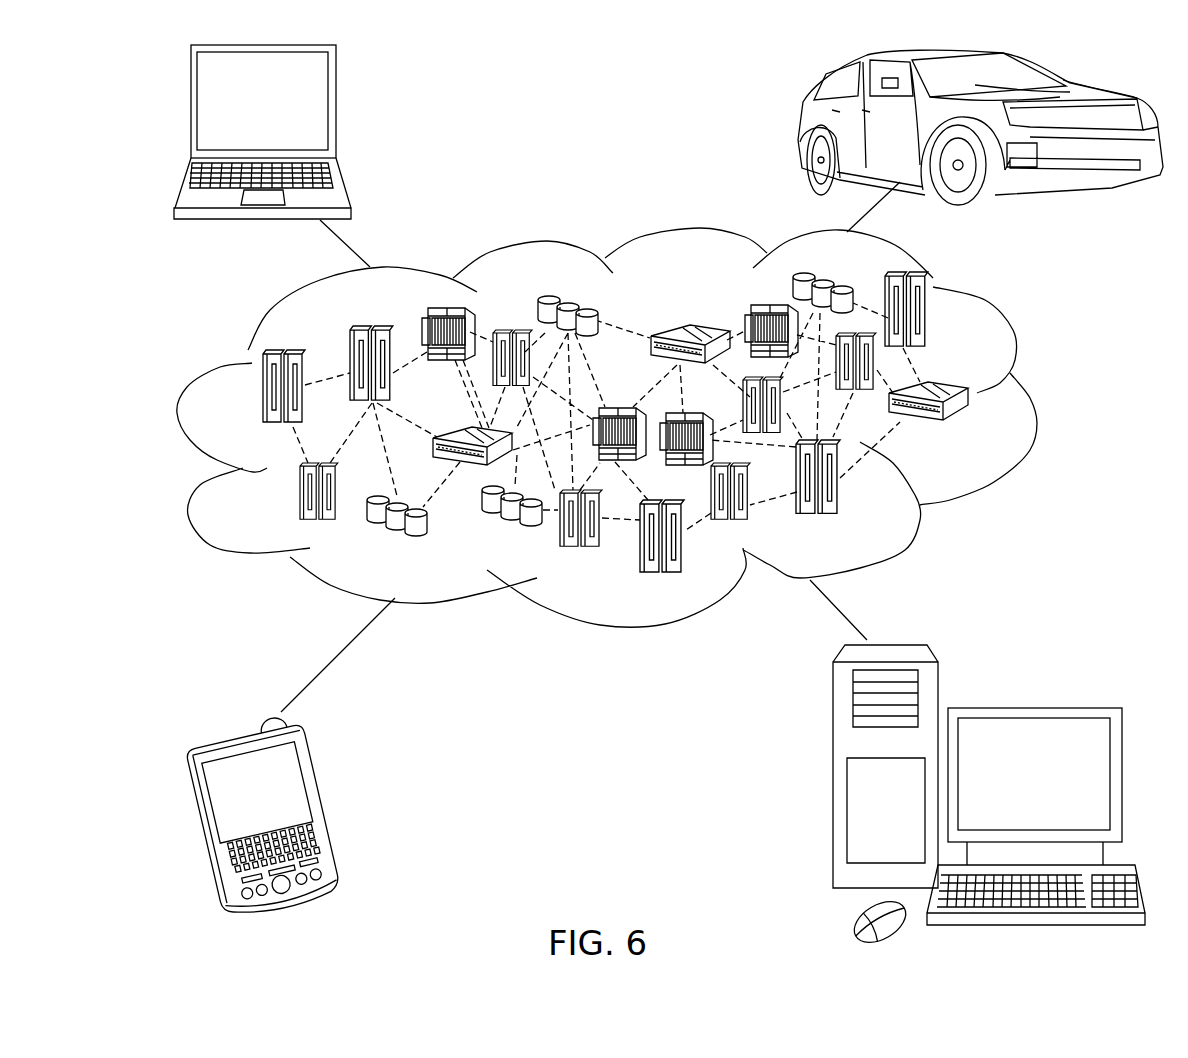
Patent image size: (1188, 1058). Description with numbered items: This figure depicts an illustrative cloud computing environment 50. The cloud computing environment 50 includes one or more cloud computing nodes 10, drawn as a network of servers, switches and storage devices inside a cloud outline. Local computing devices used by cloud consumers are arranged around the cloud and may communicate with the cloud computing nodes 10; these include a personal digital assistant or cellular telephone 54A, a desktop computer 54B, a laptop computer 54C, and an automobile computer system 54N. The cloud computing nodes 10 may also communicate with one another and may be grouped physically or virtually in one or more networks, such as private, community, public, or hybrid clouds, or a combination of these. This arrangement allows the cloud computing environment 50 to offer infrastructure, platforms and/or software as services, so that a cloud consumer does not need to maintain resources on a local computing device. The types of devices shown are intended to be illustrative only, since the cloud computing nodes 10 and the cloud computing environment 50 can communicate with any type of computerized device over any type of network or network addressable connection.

The cloud computing environment 50 is at (1033, 400).
The cloud computing nodes 10 is at (969, 432).
The personal digital assistant (PDA) or cellular telephone 54A is at (322, 803).
The desktop computer 54B is at (1032, 708).
The laptop computer 54C is at (336, 110).
The automobile computer system 54N is at (797, 128).